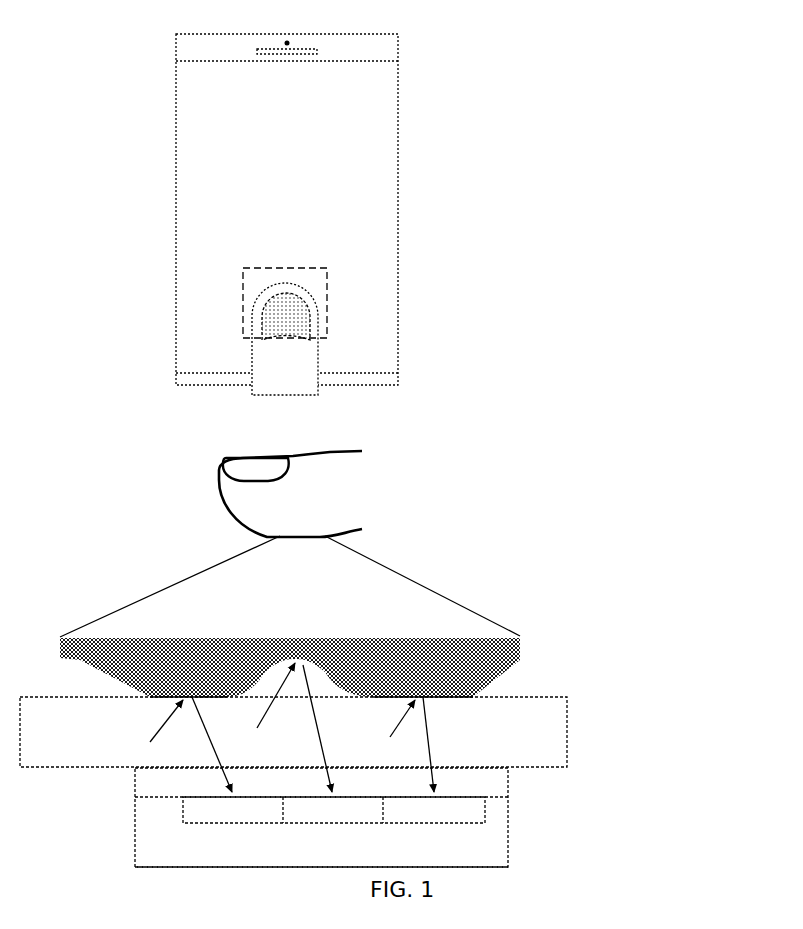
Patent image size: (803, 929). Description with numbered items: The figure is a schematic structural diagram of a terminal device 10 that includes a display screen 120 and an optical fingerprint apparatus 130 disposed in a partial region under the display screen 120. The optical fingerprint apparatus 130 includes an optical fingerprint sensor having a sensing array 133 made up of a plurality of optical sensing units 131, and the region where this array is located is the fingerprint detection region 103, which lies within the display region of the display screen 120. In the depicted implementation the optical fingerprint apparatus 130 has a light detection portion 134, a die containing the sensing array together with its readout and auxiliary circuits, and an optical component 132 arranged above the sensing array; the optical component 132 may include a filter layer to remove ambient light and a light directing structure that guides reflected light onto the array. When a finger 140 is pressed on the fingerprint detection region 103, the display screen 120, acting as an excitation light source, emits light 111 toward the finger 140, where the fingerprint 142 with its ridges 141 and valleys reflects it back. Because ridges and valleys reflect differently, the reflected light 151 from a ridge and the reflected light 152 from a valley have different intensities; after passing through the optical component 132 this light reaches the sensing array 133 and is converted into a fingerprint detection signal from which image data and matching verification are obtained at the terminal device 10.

The terminal device 10 is at (160, 20).
The display screen 120 is at (396, 218).
The fingerprint detection region 103 is at (325, 303).
The finger 140 is at (287, 383).
The fingerprint skin (ridges and valleys) 142 is at (290, 655).
The fingerprint ridge contact portion 141 is at (311, 681).
The light 111 is at (264, 709).
The reflected light from the ridge 151 is at (332, 744).
The reflected light from the valley 152 is at (330, 728).
The optical fingerprint apparatus 130 is at (405, 812).
The optical component 132 is at (508, 782).
The optical sensing unit 131 is at (337, 810).
The sensing array 133 is at (182, 805).
The light detection portion 134 is at (508, 832).